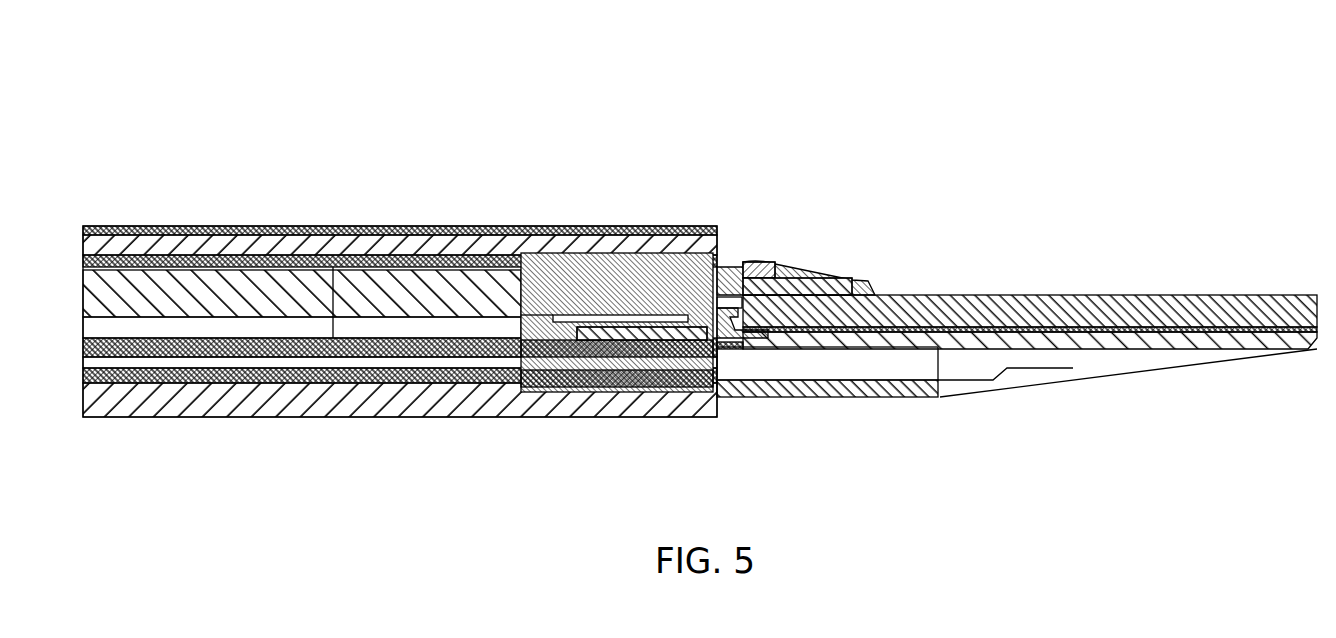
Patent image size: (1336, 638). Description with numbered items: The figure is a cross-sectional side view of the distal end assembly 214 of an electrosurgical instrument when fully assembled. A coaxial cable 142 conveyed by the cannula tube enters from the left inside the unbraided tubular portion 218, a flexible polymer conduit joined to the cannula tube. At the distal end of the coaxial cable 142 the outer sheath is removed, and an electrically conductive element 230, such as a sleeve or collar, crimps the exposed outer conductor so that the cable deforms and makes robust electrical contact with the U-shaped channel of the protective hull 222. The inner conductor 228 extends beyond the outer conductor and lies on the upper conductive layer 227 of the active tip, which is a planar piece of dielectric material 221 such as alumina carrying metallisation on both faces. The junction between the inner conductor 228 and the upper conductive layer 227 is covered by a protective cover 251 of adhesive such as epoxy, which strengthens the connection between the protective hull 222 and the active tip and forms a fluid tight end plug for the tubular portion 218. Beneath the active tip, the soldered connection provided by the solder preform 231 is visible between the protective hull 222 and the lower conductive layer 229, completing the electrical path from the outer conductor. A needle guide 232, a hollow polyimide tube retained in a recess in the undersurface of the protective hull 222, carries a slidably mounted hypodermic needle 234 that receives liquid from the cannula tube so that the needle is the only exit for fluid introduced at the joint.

The distal end assembly 214 is at (1003, 121).
The coaxial cable 142 is at (270, 282).
The unbraided tubular portion 218 is at (443, 247).
The electrically conductive element 230 is at (667, 257).
The protective cover 251 is at (755, 258).
The inner conductor 228 is at (782, 282).
The upper conductive layer 227 is at (995, 295).
The dielectric material 221 is at (1073, 310).
The protective hull 222 is at (1152, 343).
The lower conductive layer 229 is at (1060, 333).
The solder preform 231 is at (750, 347).
The needle guide 232 is at (862, 362).
The hypodermic needle 234 is at (450, 372).